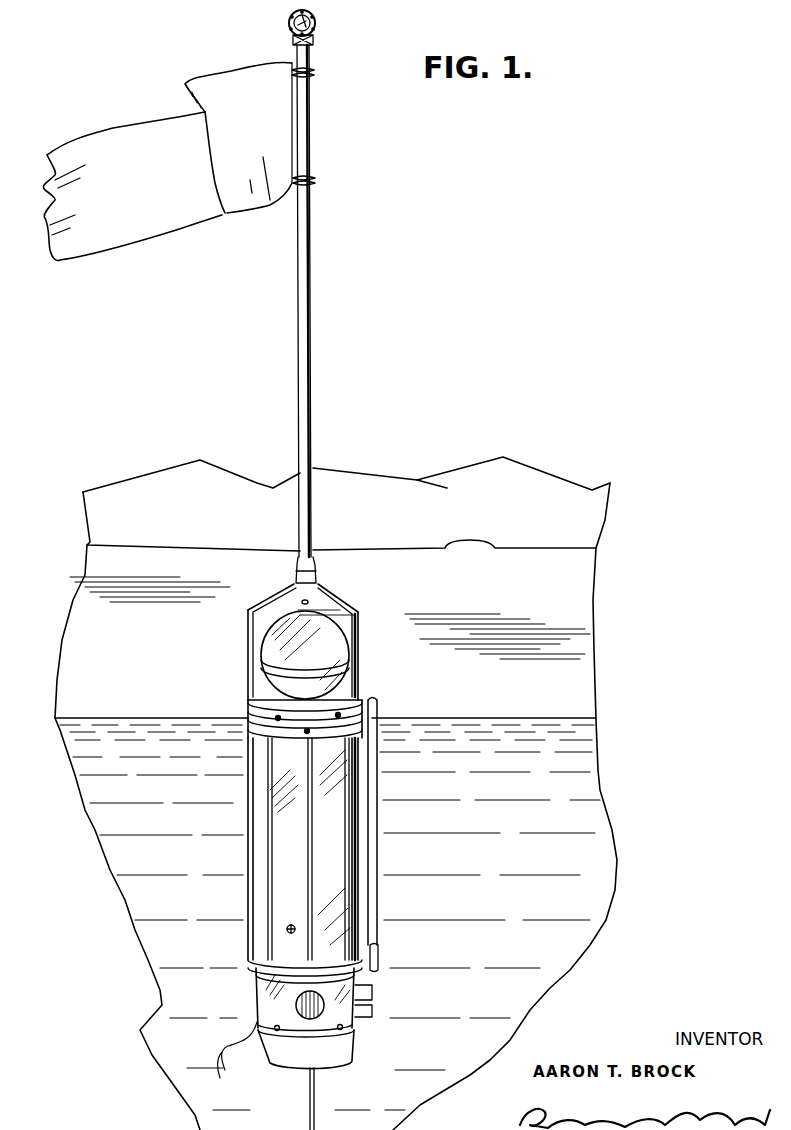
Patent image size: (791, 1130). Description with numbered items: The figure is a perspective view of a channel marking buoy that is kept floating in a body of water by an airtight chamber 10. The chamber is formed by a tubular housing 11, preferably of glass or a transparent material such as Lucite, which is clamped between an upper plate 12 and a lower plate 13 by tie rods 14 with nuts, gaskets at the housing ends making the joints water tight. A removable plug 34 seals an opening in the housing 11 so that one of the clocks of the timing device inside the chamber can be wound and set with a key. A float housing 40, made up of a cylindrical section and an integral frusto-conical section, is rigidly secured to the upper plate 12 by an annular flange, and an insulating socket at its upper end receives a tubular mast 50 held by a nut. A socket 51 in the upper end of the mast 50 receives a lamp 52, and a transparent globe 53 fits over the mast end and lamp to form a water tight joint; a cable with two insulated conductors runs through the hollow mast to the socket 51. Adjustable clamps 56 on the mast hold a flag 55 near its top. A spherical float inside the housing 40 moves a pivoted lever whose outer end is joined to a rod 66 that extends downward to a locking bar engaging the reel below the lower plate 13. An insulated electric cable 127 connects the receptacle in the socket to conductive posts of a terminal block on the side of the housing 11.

The airtight chamber 10 is at (380, 826).
The tubular housing 11 is at (340, 882).
The upper plate 12 is at (292, 740).
The lower plate 13 is at (326, 972).
The tie rods 14 is at (362, 800).
The removable plug 34 is at (290, 925).
The float housing 40 is at (368, 677).
The tubular mast 50 is at (312, 390).
The socket 51 is at (313, 43).
The lamp 52 is at (290, 28).
The transparent globe 53 is at (316, 24).
The flag 55 is at (180, 228).
The adjustable clamps 56 is at (314, 75).
The rod 66 is at (379, 860).
The insulated electric cable 127 is at (246, 638).